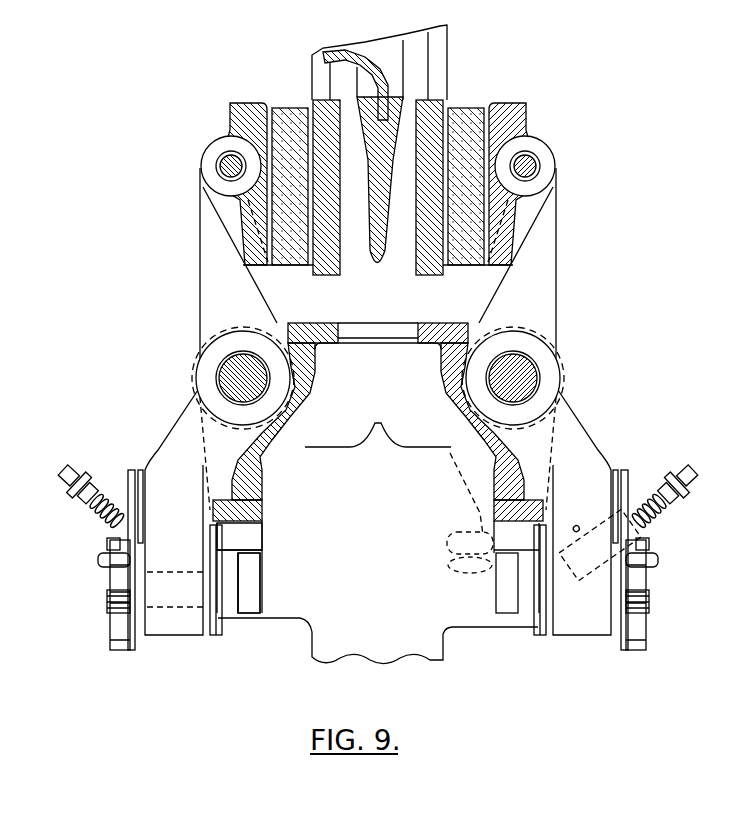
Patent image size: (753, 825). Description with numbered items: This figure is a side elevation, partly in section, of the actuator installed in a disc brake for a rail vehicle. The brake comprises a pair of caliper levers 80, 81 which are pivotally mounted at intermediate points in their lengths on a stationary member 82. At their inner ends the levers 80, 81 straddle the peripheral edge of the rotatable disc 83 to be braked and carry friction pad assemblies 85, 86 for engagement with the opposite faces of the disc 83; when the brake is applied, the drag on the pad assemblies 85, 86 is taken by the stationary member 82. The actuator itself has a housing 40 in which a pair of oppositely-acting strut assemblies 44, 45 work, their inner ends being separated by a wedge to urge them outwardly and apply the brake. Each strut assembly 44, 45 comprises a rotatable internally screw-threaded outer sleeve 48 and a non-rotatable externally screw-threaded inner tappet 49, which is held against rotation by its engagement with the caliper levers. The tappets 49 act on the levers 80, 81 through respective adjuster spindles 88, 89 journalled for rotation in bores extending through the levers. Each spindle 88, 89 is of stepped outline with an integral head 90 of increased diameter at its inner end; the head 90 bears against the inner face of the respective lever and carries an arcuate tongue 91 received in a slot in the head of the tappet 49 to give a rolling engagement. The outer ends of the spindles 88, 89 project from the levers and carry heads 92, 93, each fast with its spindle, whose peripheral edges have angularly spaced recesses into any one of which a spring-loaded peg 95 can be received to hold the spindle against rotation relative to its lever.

The housing 40 is at (407, 622).
The strut assembly 44 is at (262, 568).
The strut assembly 45 is at (540, 636).
The outer sleeve 48 is at (250, 603).
The inner tappet 49 is at (237, 613).
The caliper lever 80 is at (218, 308).
The caliper lever 81 is at (525, 286).
The stationary member 82 is at (302, 382).
The rotatable disc 83 is at (377, 272).
The friction pad assembly 85 is at (292, 118).
The friction pad assembly 86 is at (467, 120).
The adjuster spindle 88 is at (167, 607).
The adjuster spindle 89 is at (608, 613).
The head 90 is at (208, 600).
The tongue 91 is at (239, 537).
The head 92 is at (120, 622).
The head 93 is at (640, 627).
The spring-loaded peg 95 is at (100, 553).